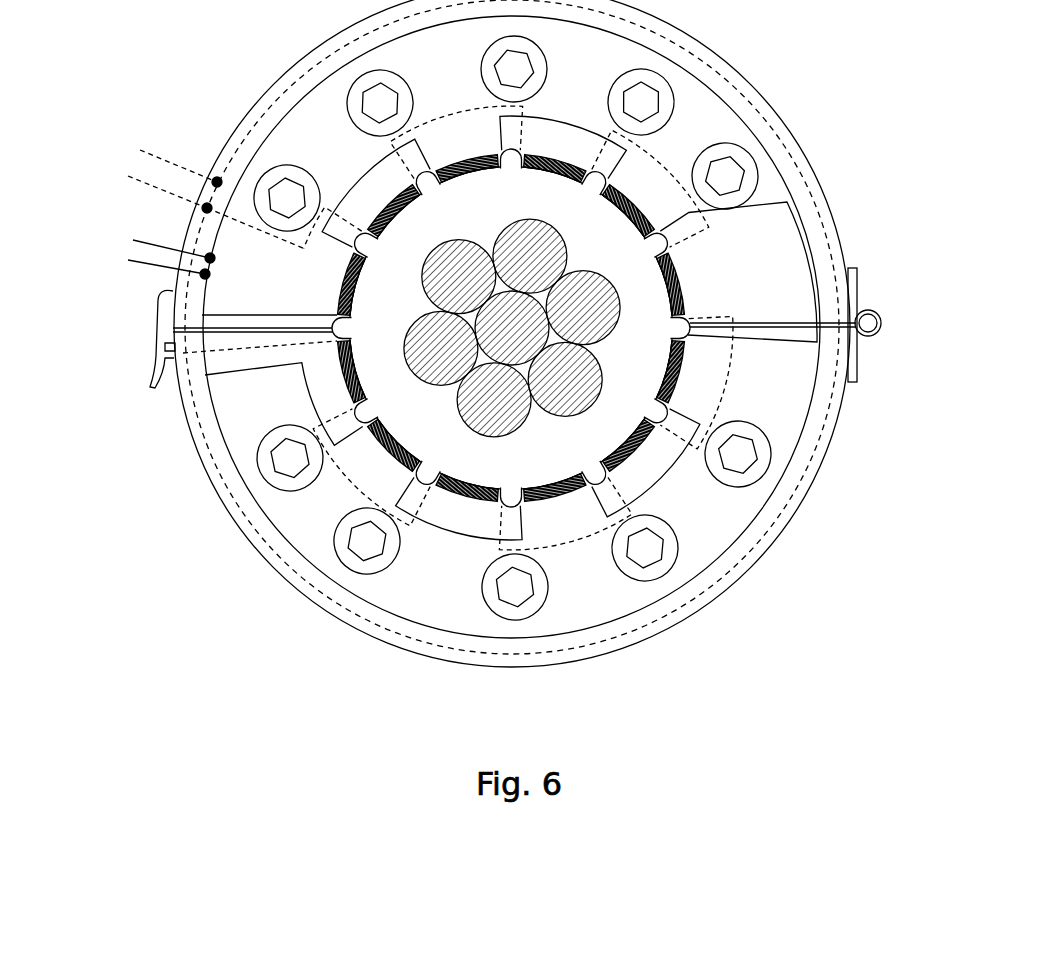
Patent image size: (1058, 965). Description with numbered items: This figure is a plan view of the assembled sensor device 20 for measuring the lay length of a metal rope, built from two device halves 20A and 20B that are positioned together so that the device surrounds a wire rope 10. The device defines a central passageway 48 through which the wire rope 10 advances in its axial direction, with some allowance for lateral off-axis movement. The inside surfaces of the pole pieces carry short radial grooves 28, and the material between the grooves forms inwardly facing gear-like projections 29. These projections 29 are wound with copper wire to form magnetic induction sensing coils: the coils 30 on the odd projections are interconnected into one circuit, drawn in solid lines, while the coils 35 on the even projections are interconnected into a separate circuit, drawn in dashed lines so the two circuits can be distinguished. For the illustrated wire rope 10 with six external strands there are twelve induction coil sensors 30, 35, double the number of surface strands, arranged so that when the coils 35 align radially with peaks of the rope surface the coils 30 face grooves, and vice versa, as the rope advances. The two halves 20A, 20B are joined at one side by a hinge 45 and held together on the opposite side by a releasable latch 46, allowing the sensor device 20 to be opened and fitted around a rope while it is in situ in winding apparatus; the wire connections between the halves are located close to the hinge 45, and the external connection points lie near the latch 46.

The wire rope 10 is at (538, 434).
The sensor device 20 is at (745, 655).
The device half 20A is at (767, 100).
The device half 20B is at (789, 522).
The radial grooves 28 is at (424, 180).
The projections 29 is at (623, 211).
The coils 30 is at (497, 156).
The coils 35 is at (581, 163).
The hinge 45 is at (882, 324).
The latch 46 is at (162, 318).
The central passageway 48 is at (374, 310).